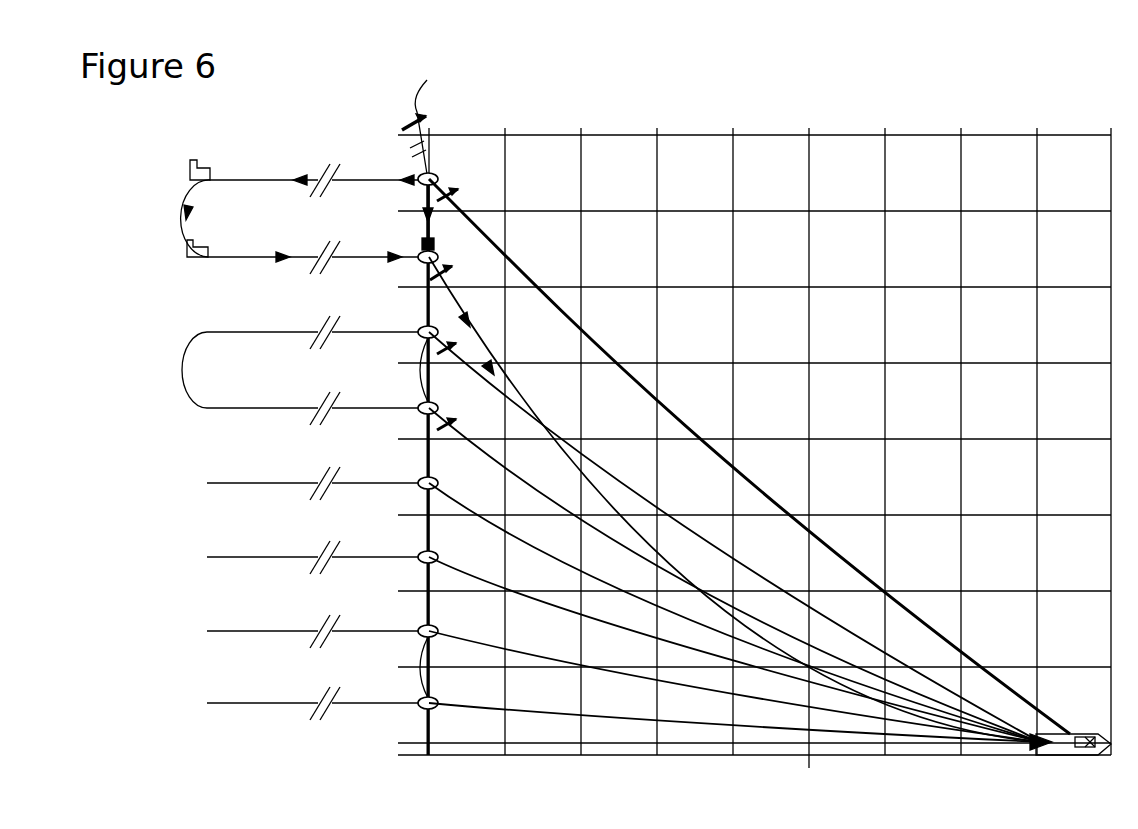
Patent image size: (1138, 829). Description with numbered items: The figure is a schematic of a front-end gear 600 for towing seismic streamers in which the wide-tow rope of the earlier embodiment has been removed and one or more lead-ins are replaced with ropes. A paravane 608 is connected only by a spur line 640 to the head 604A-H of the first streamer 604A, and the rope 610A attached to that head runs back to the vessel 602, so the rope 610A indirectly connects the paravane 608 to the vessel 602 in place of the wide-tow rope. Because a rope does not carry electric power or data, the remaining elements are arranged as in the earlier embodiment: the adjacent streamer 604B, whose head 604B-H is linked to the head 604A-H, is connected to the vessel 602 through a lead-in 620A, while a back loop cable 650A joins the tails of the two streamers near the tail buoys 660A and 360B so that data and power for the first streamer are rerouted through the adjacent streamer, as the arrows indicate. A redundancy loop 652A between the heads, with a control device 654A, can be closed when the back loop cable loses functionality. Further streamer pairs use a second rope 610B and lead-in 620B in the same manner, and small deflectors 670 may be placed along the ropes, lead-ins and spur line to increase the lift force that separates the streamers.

The front-end gear 600 is at (636, 81).
The vessel 602 is at (1063, 755).
The paravane 608 is at (436, 116).
The spur line 640 is at (415, 160).
The upper endpoint block 660A is at (194, 160).
The tail buoy 360B is at (189, 258).
The return loop 650A is at (190, 197).
The streamer 604A is at (248, 180).
The outbound path B 604B is at (252, 258).
The head of streamer 604A-H is at (418, 176).
The path B hub node 604B-H is at (417, 262).
The hub connecting segment 652A is at (420, 198).
The hub junction 654A is at (423, 243).
The direction indicators 670 is at (458, 262).
The rope 610A is at (530, 277).
The straight trajectory B 610B is at (622, 478).
The curved trajectory A 620A is at (518, 390).
The curved trajectory B 620B is at (492, 453).